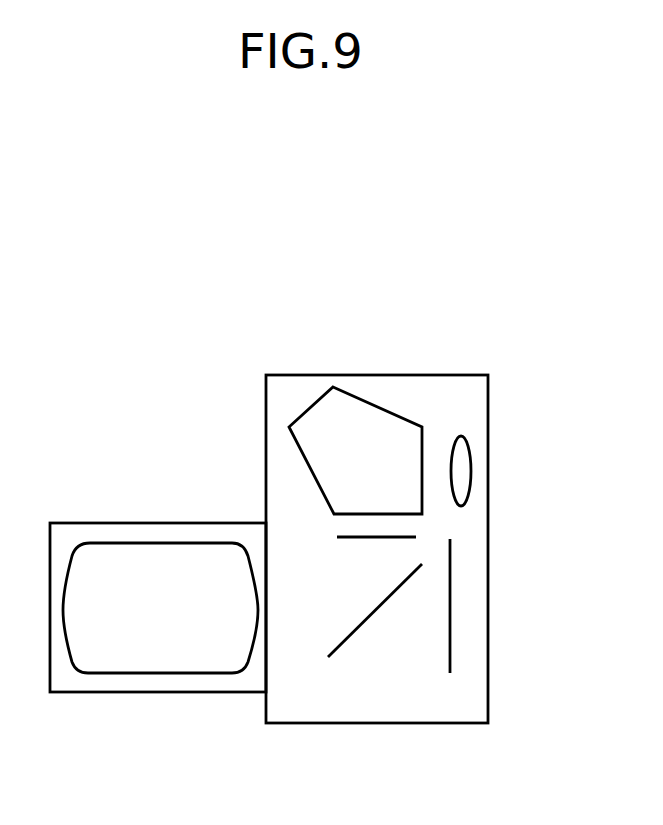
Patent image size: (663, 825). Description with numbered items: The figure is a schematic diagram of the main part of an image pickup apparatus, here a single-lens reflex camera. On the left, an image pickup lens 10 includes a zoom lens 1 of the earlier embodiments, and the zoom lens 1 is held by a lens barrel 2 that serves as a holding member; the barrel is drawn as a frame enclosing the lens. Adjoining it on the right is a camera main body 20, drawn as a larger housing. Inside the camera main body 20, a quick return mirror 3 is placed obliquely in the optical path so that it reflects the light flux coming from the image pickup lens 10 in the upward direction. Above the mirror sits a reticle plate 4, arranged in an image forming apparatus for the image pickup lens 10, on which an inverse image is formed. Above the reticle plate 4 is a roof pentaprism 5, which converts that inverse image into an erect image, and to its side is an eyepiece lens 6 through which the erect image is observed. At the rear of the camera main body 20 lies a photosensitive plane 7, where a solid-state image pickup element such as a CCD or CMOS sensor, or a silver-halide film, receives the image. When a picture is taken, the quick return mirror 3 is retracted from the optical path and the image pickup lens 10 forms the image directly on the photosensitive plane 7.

The zoom lens 1 is at (117, 543).
The lens barrel 2 is at (161, 692).
The quick return mirror 3 is at (346, 643).
The reticle plate 4 is at (350, 538).
The roof pentaprism 5 is at (313, 406).
The eyepiece lens 6 is at (471, 462).
The photosensitive plane 7 is at (450, 584).
The image pickup lens 10 is at (158, 596).
The camera main body 20 is at (358, 363).